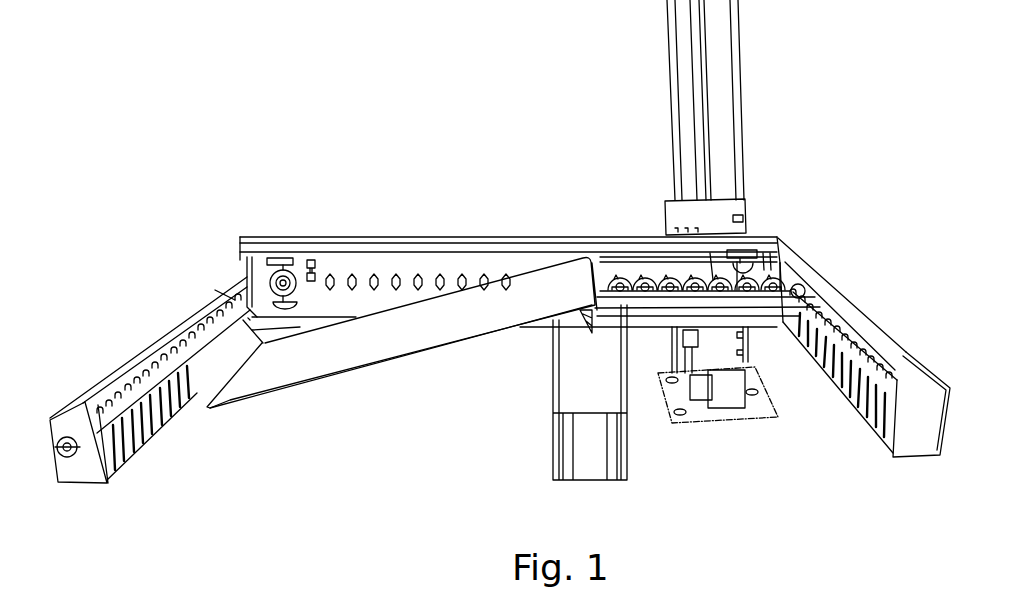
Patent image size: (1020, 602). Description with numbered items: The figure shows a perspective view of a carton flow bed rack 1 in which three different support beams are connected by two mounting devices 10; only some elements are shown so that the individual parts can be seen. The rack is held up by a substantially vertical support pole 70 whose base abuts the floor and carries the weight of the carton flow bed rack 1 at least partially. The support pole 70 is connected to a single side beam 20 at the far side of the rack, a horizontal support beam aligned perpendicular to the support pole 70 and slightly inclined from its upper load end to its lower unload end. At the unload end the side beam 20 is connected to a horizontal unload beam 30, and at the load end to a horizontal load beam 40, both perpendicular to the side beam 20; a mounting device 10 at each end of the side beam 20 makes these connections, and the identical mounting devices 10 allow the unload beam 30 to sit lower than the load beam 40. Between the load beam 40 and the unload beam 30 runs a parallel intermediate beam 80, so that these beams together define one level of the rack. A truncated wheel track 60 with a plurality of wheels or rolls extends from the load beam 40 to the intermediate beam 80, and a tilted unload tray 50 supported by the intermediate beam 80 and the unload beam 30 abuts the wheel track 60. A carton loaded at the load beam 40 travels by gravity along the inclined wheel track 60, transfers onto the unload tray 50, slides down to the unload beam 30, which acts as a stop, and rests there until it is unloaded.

The carton flow bed rack 1 is at (497, 100).
The mounting device 10 is at (262, 268).
The side beam 20 is at (407, 267).
The unload beam 30 is at (147, 388).
The load beam 40 is at (827, 300).
The unload tray 50 is at (360, 353).
The wheel track 60 is at (755, 300).
The support pole 70 is at (718, 73).
The intermediate beam 80 is at (572, 380).